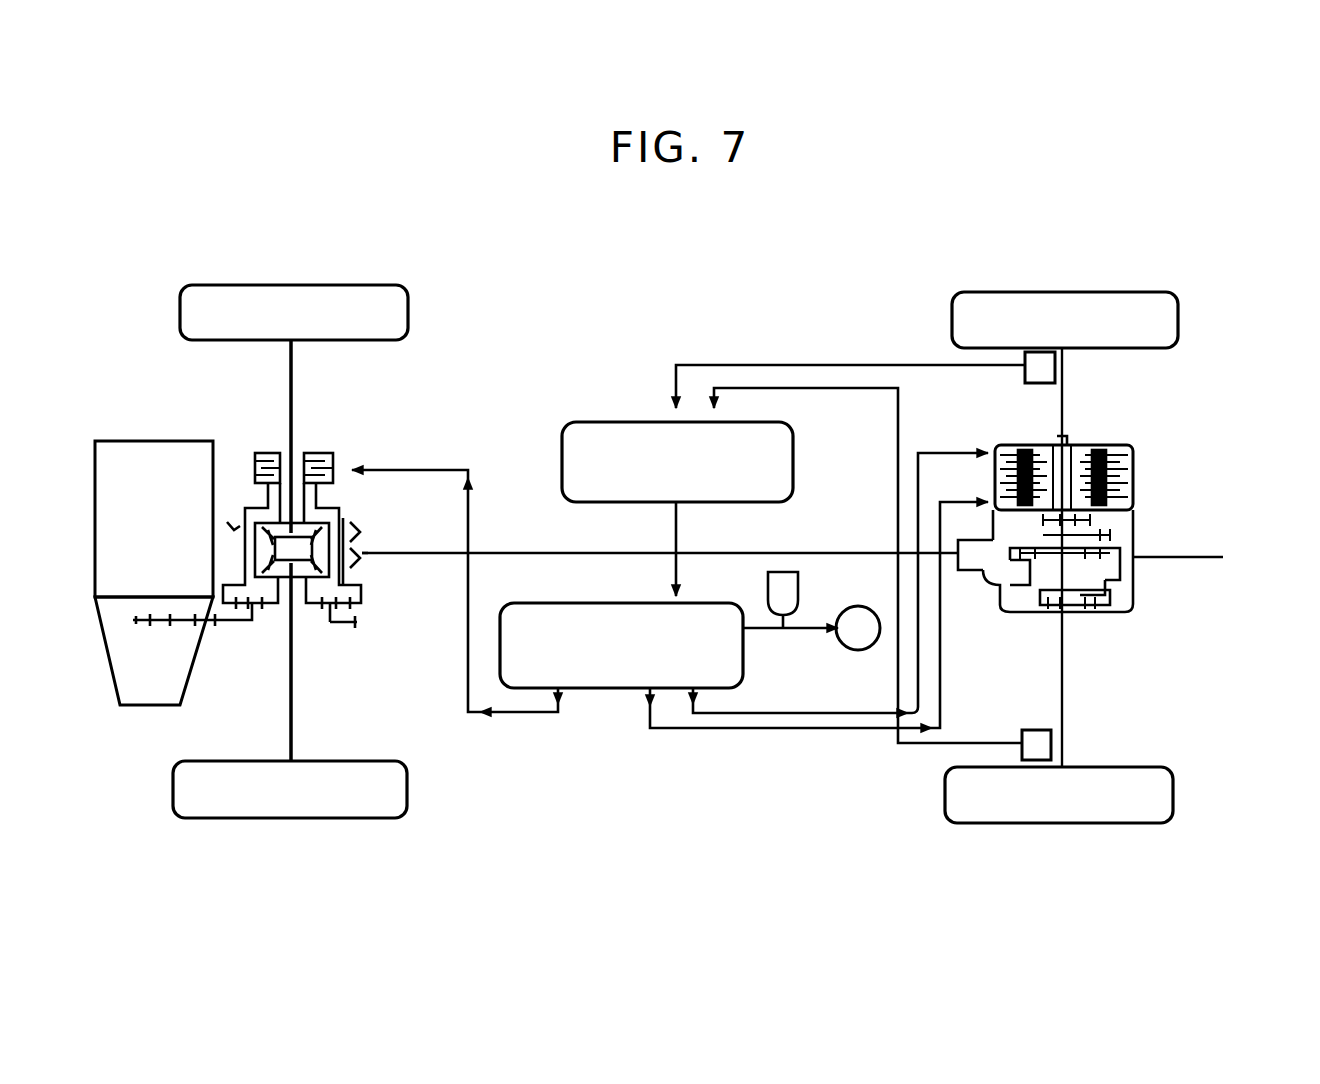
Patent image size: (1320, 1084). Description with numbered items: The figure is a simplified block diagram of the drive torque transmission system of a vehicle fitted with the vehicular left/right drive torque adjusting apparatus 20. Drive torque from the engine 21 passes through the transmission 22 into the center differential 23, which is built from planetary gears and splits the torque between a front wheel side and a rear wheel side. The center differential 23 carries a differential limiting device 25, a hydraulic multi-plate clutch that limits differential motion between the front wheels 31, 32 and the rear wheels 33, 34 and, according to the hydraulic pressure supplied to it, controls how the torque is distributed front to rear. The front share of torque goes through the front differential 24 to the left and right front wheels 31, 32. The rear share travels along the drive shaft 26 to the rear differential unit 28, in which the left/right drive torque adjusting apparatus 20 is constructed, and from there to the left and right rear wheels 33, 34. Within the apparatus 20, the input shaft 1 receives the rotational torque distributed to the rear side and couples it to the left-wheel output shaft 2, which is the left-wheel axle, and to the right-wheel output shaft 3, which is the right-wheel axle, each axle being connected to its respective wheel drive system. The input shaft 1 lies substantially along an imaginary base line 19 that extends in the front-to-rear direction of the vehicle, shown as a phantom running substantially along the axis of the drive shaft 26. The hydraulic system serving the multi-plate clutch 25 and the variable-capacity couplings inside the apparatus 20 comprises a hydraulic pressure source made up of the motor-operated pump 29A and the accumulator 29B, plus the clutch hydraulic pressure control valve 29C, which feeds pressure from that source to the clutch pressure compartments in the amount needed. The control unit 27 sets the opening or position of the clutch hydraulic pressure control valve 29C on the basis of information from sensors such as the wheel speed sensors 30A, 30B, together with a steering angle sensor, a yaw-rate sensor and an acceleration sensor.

The input shaft 1 is at (970, 562).
The left-wheel output shaft 2 is at (1063, 677).
The right-wheel output shaft 3 is at (1063, 406).
The imaginary base line 19 is at (1185, 557).
The vehicular left/right drive torque adjusting apparatus 20 is at (1094, 540).
The engine 21 is at (140, 441).
The transmission 22 is at (141, 697).
The center differential 23 is at (302, 635).
The front differential 24 is at (350, 512).
The differential limiting device 25 is at (322, 450).
The drive shaft 26 is at (540, 553).
The control unit 27 is at (598, 421).
The rear differential unit 28 is at (1142, 604).
The motor-operated pump 29A is at (845, 650).
The accumulator 29B is at (799, 586).
The clutch hydraulic pressure control valve 29C is at (618, 690).
The wheel speed sensor 30A is at (1051, 743).
The wheel speed sensor 30B is at (1050, 365).
The front wheel 31 is at (337, 810).
The front wheel 32 is at (330, 285).
The rear wheel 33 is at (1103, 815).
The rear wheel 34 is at (1065, 292).